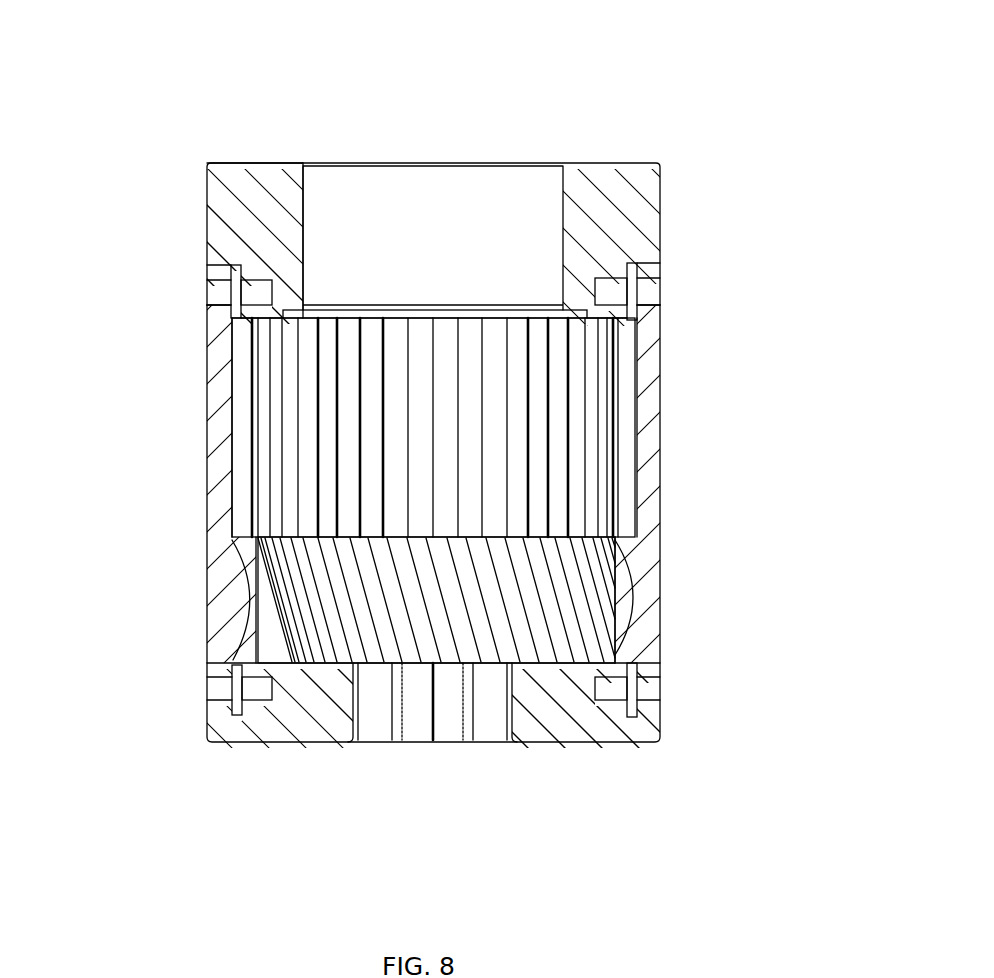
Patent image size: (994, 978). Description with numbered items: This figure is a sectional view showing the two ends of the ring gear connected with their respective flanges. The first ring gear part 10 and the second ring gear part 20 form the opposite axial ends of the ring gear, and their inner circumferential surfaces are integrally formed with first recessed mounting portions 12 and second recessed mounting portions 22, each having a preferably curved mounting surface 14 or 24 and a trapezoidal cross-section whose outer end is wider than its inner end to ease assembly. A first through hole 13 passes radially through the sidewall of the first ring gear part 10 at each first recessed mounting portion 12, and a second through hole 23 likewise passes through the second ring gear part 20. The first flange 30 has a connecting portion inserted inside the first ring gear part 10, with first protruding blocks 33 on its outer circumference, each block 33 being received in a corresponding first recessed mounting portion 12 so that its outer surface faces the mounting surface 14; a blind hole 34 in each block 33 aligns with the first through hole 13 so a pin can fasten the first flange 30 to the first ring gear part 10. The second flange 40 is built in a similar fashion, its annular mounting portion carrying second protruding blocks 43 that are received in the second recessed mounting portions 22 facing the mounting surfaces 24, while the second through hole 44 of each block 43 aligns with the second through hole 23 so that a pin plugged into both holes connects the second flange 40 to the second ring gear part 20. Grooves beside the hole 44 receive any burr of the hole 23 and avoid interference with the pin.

The first ring gear part 10 is at (218, 652).
The first recessed mounting portion 12 is at (637, 670).
The first through hole 13 is at (653, 690).
The mounting surface 14 is at (217, 708).
The second ring gear part 20 is at (215, 375).
The second recessed mounting portion 22 is at (223, 307).
The second through hole 23 is at (215, 292).
The mounting surface 24 is at (637, 312).
The first flange 30 is at (543, 743).
The first protruding block 33 is at (640, 717).
The blind hole 34 is at (612, 690).
The second flange 40 is at (612, 160).
The second protruding block 43 is at (237, 267).
The second through hole 44 is at (258, 292).